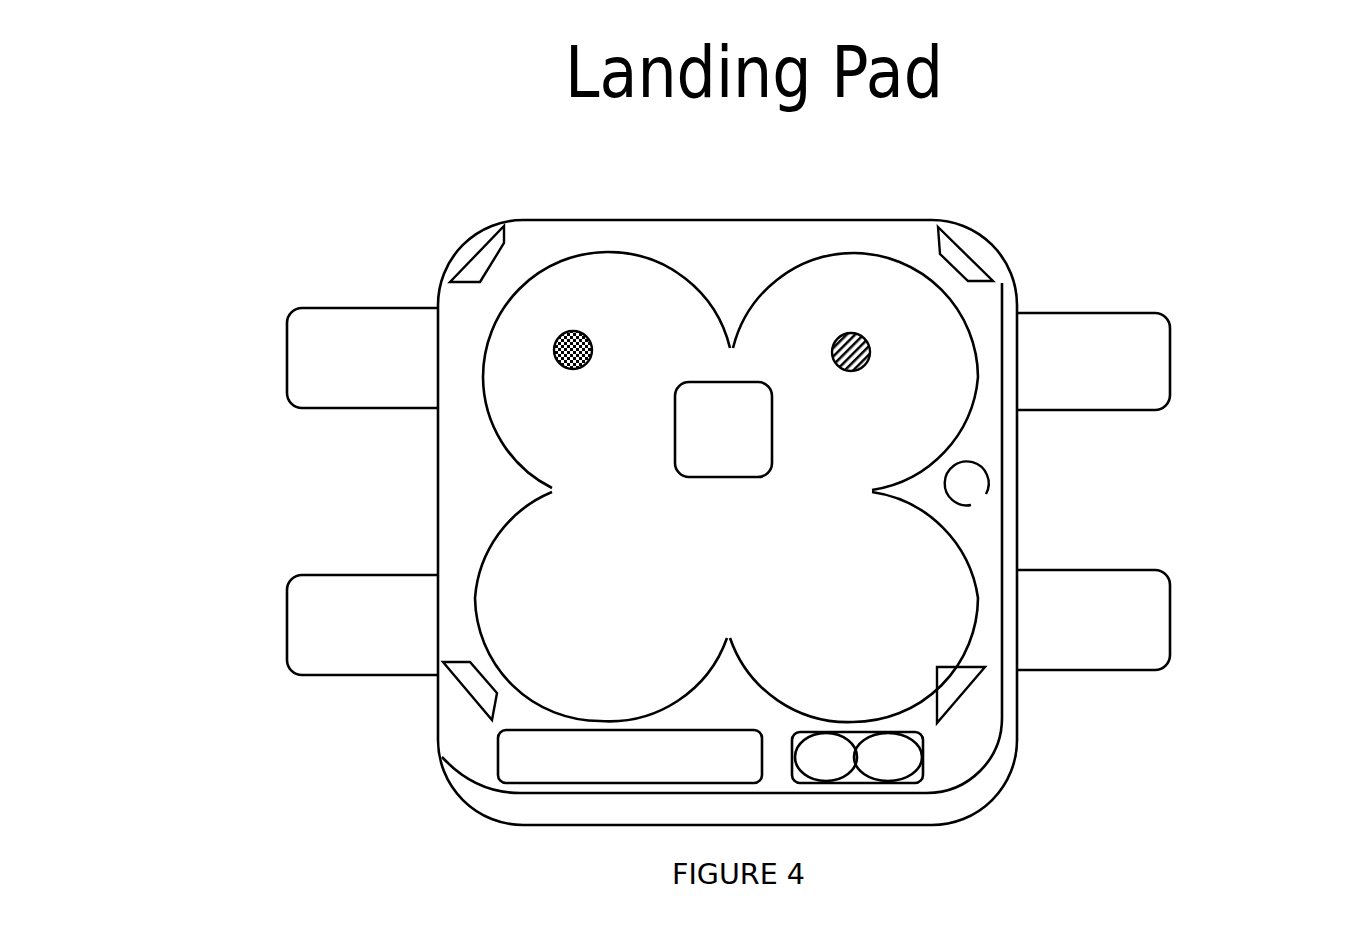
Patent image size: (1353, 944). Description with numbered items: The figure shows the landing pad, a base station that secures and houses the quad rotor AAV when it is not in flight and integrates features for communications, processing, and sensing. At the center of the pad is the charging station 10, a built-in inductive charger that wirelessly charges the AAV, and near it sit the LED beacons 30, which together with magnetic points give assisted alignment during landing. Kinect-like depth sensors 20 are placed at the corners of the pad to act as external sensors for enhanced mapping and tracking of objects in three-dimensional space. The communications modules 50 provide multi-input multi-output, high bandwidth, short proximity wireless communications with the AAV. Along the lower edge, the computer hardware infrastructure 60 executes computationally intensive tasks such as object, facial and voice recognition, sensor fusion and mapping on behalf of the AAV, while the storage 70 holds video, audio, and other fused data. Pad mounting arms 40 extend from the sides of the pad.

The charging station 10 is at (1167, 455).
The depth sensors 20 is at (462, 694).
The LED beacons 30 is at (415, 153).
The pad mounting arms 40 is at (1247, 223).
The communications modules 50 is at (998, 481).
The computer hardware infrastructure 60 is at (496, 755).
The storage 70 is at (927, 757).